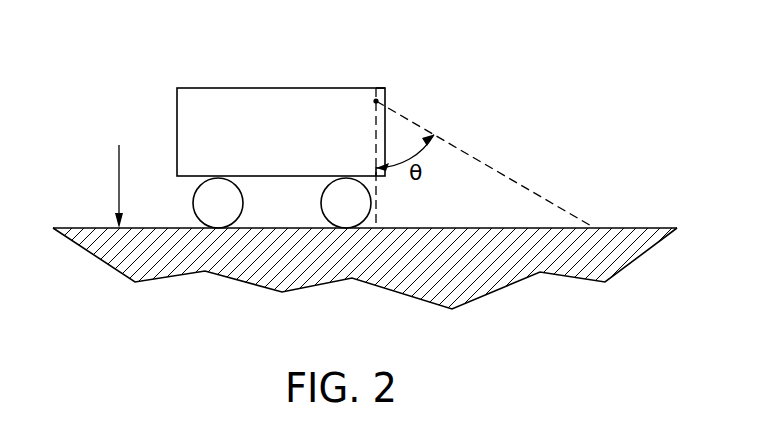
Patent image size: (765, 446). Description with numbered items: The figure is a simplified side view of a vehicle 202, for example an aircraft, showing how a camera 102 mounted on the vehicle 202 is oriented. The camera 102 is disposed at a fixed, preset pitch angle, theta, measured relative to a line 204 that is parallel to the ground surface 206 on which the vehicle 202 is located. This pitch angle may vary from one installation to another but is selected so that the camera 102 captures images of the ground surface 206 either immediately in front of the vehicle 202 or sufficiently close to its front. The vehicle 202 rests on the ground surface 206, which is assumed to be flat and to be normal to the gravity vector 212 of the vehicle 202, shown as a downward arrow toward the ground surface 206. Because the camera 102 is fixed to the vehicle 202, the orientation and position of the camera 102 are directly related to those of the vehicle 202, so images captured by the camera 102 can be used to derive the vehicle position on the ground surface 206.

The camera 102 is at (376, 98).
The vehicle 202 is at (247, 95).
The line 204 is at (378, 205).
The ground surface 206 is at (623, 226).
The gravity vector 212 is at (118, 175).